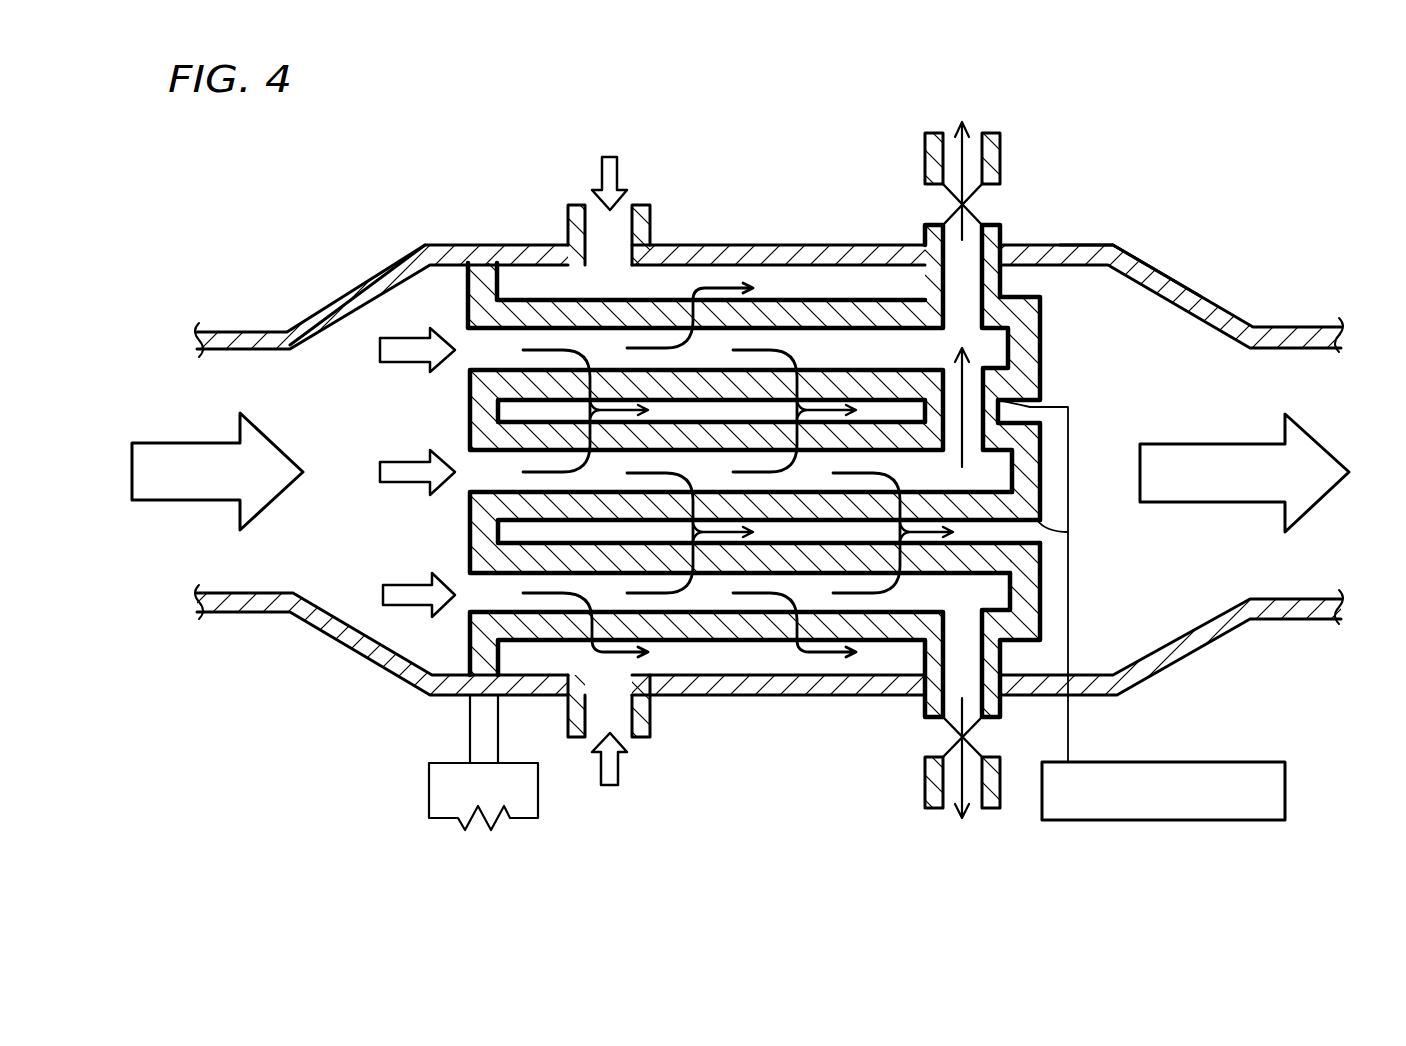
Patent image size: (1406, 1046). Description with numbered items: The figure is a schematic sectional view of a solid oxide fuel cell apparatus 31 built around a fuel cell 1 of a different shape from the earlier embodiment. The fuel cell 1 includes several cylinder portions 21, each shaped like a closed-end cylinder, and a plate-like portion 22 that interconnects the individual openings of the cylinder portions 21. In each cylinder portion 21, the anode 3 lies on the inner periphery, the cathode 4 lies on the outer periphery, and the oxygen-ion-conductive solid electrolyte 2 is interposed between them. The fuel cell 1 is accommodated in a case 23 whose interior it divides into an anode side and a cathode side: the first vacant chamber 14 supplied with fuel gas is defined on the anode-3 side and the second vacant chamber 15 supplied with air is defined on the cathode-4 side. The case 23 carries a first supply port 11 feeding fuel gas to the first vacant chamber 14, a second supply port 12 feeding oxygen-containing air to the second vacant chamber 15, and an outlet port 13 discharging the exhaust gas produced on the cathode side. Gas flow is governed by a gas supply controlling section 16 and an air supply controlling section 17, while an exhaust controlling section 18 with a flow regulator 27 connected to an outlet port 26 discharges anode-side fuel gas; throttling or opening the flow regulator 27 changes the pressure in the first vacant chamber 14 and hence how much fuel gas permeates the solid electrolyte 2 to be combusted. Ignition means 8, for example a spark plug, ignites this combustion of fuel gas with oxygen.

The fuel cell 1 is at (691, 293).
The solid electrolyte 2 is at (568, 300).
The anode 3 is at (612, 352).
The cathode 4 is at (515, 293).
The ignition means 8 is at (1212, 820).
The first supply port 11 is at (247, 365).
The second supply port 12 is at (592, 232).
The outlet port 13 is at (1278, 605).
The first vacant chamber 14 is at (328, 542).
The second vacant chamber 15 is at (1179, 393).
The gas supply controlling section 16 is at (94, 480).
The air supply controlling section 17 is at (624, 144).
The exhaust controlling section 18 is at (1400, 480).
The cylinder portion 21 is at (885, 420).
The plate-like portion 22 is at (467, 408).
The case 23 is at (424, 245).
The outlet port 26 is at (975, 225).
The flow regulator 27 is at (945, 222).
The fuel cell apparatus 31 is at (1063, 217).